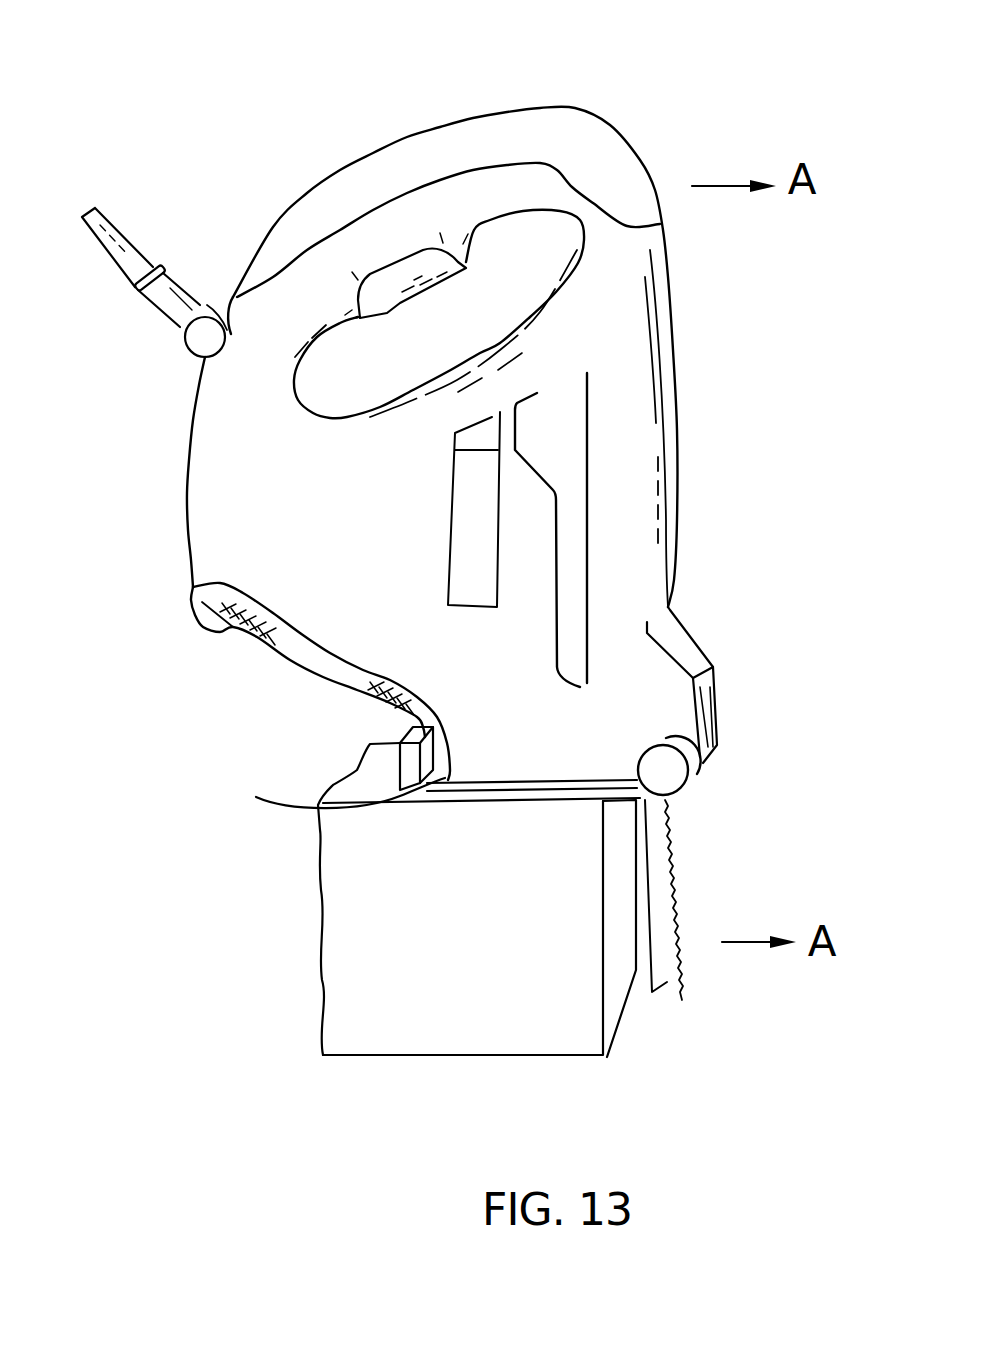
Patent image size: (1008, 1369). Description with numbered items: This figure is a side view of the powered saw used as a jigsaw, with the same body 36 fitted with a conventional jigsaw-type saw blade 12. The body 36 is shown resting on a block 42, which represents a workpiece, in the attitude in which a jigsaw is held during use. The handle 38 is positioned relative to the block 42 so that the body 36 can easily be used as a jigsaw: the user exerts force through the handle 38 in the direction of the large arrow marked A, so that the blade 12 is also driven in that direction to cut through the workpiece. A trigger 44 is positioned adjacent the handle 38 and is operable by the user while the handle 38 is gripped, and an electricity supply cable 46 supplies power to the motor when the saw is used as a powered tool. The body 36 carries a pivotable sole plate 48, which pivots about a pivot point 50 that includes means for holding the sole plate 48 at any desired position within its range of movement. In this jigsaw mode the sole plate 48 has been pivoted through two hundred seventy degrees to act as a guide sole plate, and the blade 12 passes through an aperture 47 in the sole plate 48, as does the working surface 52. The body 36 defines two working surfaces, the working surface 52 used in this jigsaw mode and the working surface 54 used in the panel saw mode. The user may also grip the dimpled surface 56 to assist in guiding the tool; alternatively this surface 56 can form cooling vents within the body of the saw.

The saw blade 12 is at (665, 988).
The body 36 is at (645, 406).
The handle 38 is at (608, 153).
The block 42 is at (360, 963).
The trigger 44 is at (403, 270).
The electricity supply cable 46 is at (124, 246).
The aperture 47 is at (258, 797).
The sole plate 48 is at (410, 763).
The pivot point 50 is at (670, 773).
The working surface 52 is at (500, 807).
The working surface 54 is at (718, 685).
The dimpled surface 56 is at (187, 497).